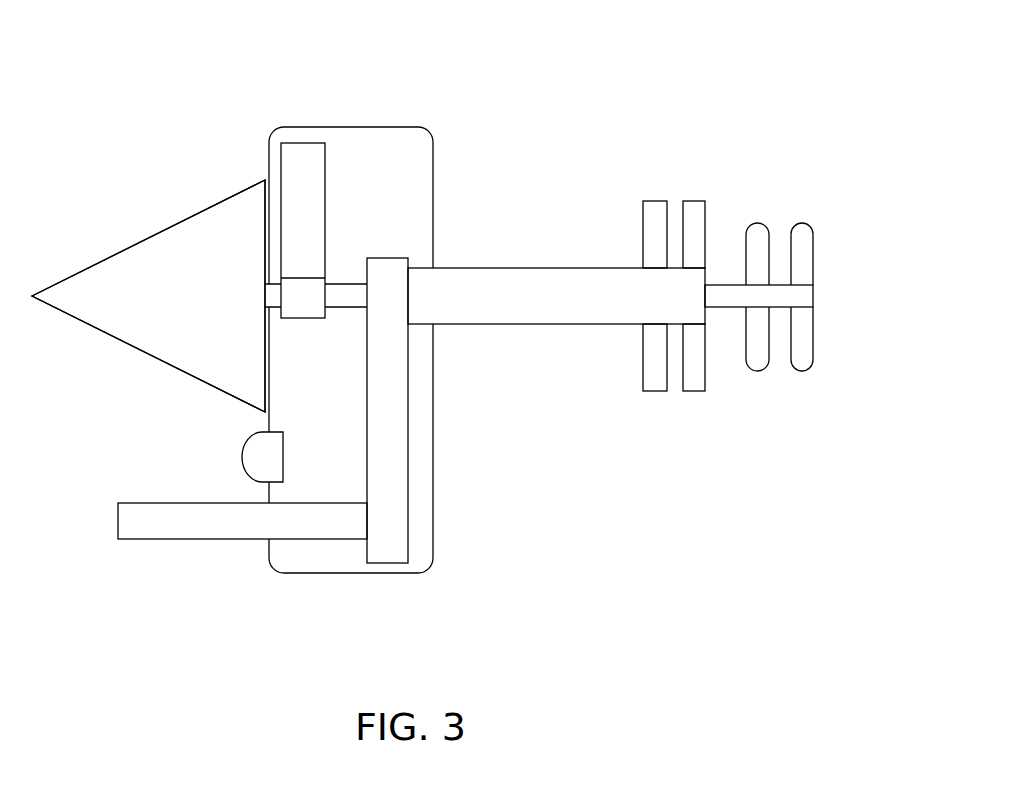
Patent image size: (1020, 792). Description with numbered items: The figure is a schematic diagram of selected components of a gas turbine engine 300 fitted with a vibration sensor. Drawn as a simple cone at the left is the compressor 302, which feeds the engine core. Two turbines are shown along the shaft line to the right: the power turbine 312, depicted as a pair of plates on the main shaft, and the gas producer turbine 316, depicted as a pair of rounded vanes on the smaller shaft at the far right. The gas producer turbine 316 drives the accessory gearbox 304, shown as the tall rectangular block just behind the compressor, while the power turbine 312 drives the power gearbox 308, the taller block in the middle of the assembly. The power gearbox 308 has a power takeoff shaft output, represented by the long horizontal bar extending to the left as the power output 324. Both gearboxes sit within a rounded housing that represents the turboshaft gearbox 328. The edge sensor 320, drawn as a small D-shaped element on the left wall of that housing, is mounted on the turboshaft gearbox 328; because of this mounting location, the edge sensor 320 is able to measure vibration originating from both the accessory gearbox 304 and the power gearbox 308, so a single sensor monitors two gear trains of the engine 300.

The gas turbine engine 300 is at (196, 118).
The compressor 302 is at (148, 238).
The accessory gearbox 304 is at (326, 162).
The power gearbox 308 is at (410, 546).
The power turbine 312 is at (664, 180).
The gas producer turbine 316 is at (812, 198).
The edge sensor 320 is at (243, 458).
The power output 324 is at (138, 558).
The turboshaft gearbox 328 is at (292, 574).